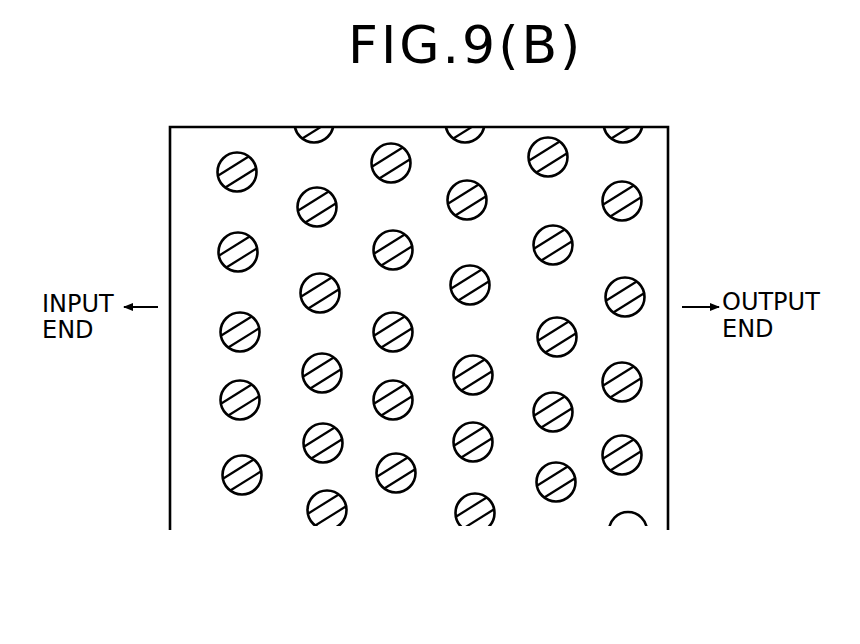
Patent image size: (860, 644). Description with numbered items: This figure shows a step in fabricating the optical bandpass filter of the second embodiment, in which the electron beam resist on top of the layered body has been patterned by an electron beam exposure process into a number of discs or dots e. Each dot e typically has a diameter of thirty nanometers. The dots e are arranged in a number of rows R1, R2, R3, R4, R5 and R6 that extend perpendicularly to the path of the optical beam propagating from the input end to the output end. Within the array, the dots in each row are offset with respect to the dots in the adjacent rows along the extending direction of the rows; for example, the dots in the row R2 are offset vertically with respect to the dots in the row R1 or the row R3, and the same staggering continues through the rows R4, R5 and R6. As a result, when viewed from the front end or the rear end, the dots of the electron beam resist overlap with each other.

The dot e is at (644, 291).
The row R1 is at (243, 563).
The row R2 is at (331, 563).
The row R3 is at (400, 563).
The row R4 is at (476, 563).
The row R5 is at (558, 563).
The row R6 is at (648, 364).